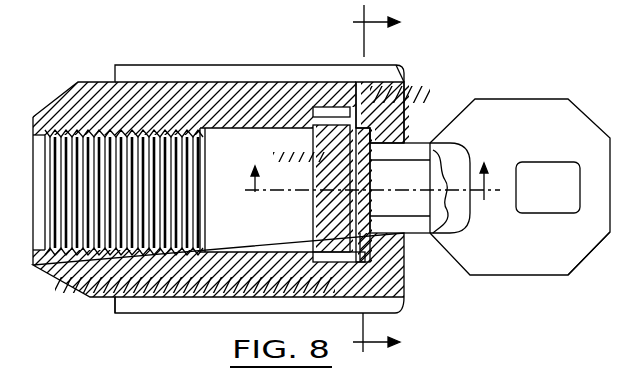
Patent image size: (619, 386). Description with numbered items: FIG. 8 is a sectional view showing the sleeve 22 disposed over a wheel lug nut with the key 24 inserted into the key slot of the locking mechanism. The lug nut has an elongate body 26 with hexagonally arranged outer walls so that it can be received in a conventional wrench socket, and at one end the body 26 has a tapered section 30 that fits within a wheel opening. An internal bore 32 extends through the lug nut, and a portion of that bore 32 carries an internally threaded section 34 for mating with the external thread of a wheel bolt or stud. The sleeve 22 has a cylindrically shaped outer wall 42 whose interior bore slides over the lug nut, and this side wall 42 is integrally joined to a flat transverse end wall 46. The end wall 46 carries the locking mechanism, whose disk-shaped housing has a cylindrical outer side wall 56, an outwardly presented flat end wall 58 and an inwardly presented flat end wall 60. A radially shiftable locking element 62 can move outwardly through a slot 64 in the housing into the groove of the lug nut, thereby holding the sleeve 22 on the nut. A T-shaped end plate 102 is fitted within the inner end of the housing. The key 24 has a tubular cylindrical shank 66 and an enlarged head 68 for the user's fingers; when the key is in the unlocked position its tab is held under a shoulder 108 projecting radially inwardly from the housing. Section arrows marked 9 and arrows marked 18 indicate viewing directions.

The key 24 is at (542, 91).
The lug nut body 26 is at (160, 100).
The tapered section 30 is at (80, 88).
The internal bore 32 is at (220, 313).
The internally threaded section 34 is at (198, 163).
The cylindrically shaped outer wall 42 is at (248, 72).
The end wall 46 is at (403, 72).
The outer side wall 56 is at (321, 268).
The outwardly presented flat end wall 58 is at (408, 250).
The inwardly presented flat end wall 60 is at (308, 263).
The locking element 62 is at (400, 117).
The slot 64 is at (348, 175).
The key shank 66 is at (428, 234).
The enlarged head 68 is at (564, 250).
The end plate 102 is at (325, 221).
The shoulder 108 is at (377, 104).
The sleeve 22 is at (394, 40).
The direction arrow 18 is at (283, 176).
The section line 9- 9 is at (432, 33).